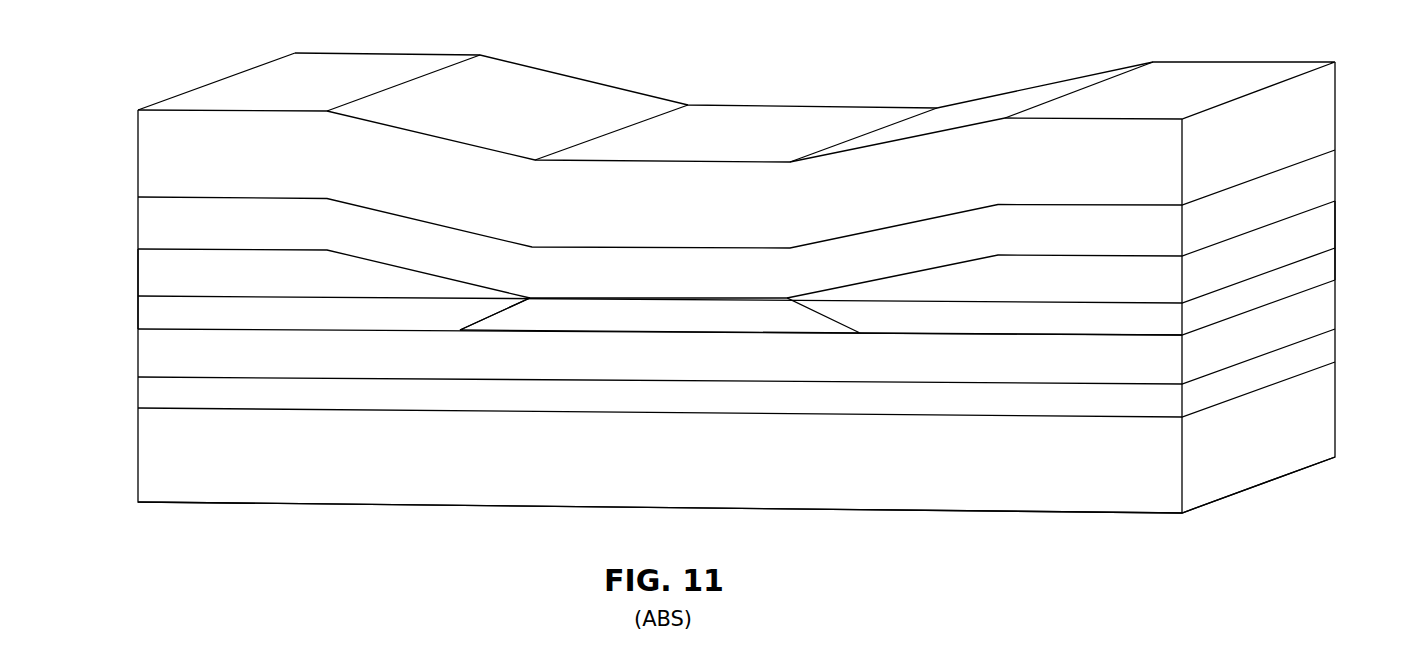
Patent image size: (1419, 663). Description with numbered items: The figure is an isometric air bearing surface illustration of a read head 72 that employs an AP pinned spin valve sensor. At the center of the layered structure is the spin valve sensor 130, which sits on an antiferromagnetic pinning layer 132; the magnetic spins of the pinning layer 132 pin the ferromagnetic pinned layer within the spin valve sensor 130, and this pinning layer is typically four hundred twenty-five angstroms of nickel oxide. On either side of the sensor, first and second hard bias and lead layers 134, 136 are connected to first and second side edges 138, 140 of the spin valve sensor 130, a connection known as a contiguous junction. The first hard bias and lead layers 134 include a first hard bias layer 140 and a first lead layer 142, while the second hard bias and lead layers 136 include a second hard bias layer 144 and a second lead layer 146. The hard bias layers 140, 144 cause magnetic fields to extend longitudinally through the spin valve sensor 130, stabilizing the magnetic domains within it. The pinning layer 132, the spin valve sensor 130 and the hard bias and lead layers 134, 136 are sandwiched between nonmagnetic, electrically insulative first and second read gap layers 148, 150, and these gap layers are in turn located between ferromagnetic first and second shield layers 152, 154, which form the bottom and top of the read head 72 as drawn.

The read head 72 is at (822, 72).
The spin valve sensor 130 is at (569, 284).
The antiferromagnetic pinning layer 132 is at (858, 362).
The first hard bias and lead layers 134 is at (133, 249).
The second hard bias and lead layers 136 is at (1339, 200).
The first side edge 138 is at (482, 318).
The first hard bias layer 140 is at (182, 313).
The first lead layer 142 is at (182, 262).
The second hard bias layer 144 is at (1128, 322).
The second lead layer 146 is at (1130, 270).
The first read gap layer 148 is at (430, 400).
The second read gap layer 150 is at (392, 230).
The first shield layer 152 is at (312, 483).
The second shield layer 154 is at (590, 90).